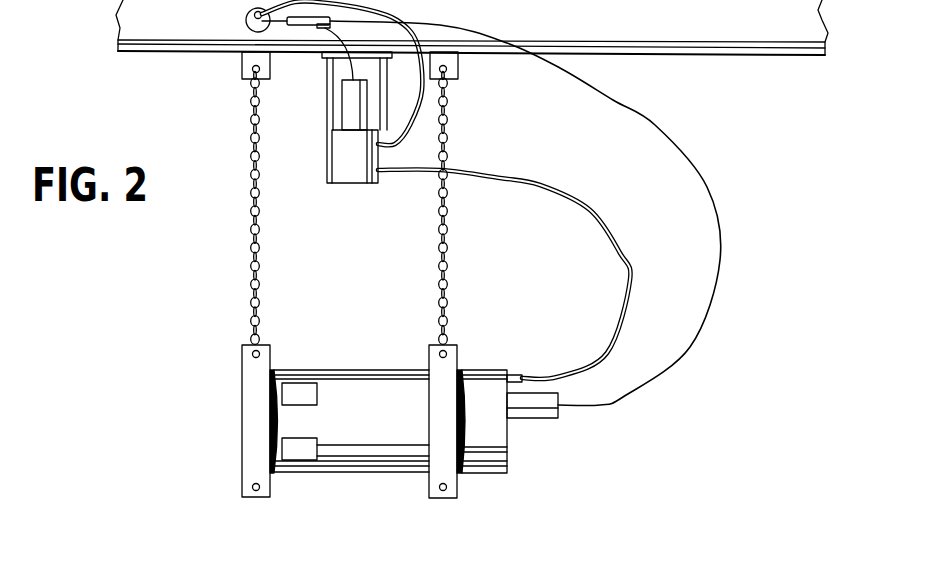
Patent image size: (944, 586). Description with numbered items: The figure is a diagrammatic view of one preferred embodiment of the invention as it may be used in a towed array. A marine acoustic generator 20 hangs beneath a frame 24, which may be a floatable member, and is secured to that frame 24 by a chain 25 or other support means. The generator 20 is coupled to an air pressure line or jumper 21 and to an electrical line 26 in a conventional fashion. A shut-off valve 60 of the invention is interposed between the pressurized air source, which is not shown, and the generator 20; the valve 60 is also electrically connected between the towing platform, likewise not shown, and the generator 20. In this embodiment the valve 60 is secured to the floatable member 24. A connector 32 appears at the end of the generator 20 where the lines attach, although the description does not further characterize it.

The marine acoustic generator 20 is at (360, 443).
The air pressure line or jumper 21 is at (623, 260).
The frame 24 is at (733, 48).
The chain 25 is at (440, 235).
The electrical line 26 is at (717, 217).
The connector 32 is at (538, 416).
The shut-off valve 60 is at (320, 163).